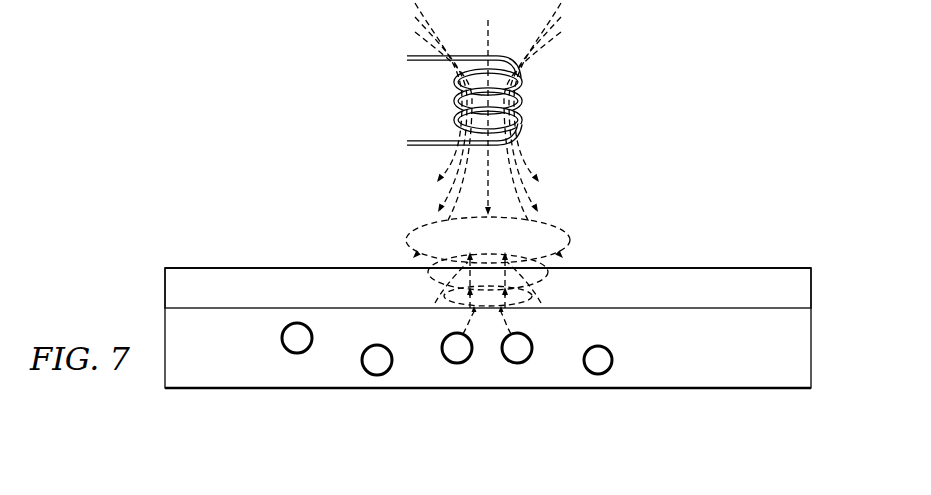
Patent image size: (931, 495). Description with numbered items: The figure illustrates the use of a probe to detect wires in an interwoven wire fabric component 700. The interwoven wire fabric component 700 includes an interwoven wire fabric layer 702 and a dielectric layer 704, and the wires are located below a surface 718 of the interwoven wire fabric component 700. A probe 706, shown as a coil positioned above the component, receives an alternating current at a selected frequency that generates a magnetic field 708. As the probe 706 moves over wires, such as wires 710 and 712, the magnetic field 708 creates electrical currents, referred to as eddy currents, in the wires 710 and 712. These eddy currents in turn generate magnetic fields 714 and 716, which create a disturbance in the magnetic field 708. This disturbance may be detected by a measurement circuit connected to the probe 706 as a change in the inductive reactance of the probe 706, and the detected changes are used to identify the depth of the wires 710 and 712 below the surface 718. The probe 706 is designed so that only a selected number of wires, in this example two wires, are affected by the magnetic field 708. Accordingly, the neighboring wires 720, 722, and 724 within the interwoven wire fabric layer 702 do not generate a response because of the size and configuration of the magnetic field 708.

The interwoven wire fabric component 700 is at (678, 126).
The interwoven wire fabric layer 702 is at (255, 398).
The dielectric layer 704 is at (255, 258).
The probe 706 is at (455, 100).
The magnetic field 708 is at (520, 158).
The wire 710 is at (460, 364).
The wire 712 is at (515, 364).
The magnetic field 714 is at (443, 315).
The magnetic field 716 is at (533, 316).
The surface 718 is at (680, 266).
The wire 720 is at (283, 338).
The wire 722 is at (362, 361).
The wire 724 is at (613, 360).